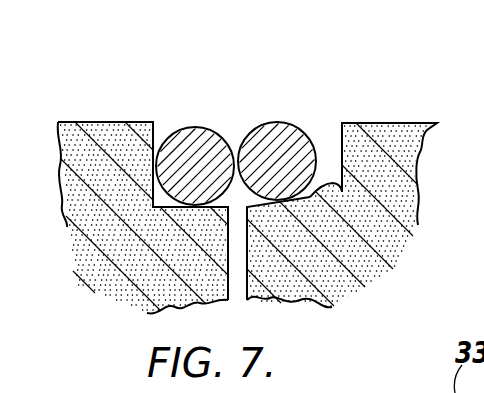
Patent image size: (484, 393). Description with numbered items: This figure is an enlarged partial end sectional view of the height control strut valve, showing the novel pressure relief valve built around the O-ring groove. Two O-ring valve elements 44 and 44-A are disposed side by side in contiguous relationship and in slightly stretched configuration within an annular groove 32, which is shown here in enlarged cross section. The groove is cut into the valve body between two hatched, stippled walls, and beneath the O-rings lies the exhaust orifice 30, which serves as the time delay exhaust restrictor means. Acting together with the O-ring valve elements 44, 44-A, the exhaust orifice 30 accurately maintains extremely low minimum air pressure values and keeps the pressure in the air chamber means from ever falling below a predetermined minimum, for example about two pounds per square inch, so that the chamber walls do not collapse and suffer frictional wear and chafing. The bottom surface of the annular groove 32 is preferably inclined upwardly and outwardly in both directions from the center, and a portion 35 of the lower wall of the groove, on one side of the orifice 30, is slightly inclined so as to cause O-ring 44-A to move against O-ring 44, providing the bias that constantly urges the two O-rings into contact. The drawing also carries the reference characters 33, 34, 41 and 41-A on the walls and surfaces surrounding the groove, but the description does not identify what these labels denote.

The exhaust orifice 30 is at (235, 267).
The annular groove 32 is at (337, 128).
The left body wall 33 is at (158, 130).
The groove 34 is at (152, 206).
The portion of the lower wall of the groove 35 is at (309, 192).
The top surface 41 is at (418, 106).
The top surface 41-A is at (411, 384).
The O-ring valve element 44 is at (187, 135).
The O-ring valve element 44-A is at (285, 125).